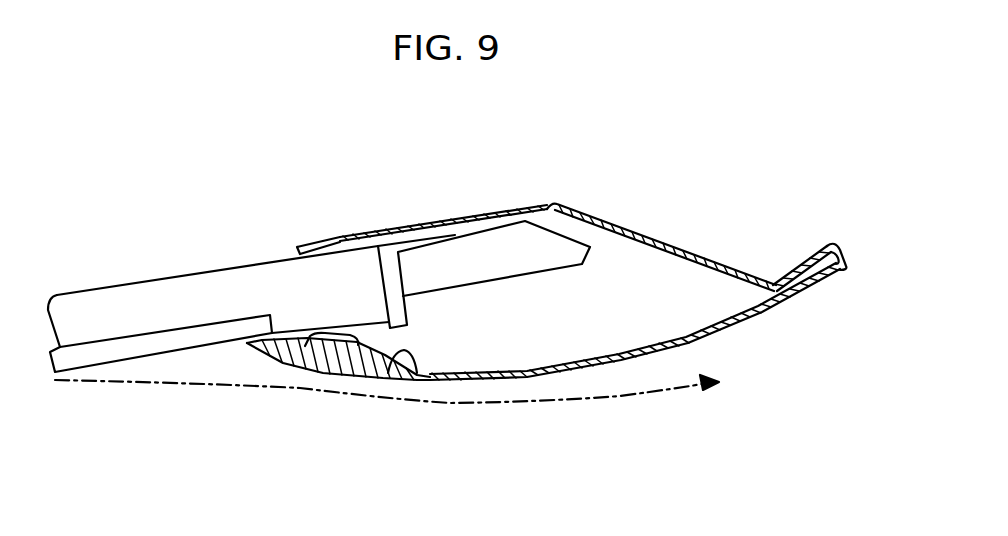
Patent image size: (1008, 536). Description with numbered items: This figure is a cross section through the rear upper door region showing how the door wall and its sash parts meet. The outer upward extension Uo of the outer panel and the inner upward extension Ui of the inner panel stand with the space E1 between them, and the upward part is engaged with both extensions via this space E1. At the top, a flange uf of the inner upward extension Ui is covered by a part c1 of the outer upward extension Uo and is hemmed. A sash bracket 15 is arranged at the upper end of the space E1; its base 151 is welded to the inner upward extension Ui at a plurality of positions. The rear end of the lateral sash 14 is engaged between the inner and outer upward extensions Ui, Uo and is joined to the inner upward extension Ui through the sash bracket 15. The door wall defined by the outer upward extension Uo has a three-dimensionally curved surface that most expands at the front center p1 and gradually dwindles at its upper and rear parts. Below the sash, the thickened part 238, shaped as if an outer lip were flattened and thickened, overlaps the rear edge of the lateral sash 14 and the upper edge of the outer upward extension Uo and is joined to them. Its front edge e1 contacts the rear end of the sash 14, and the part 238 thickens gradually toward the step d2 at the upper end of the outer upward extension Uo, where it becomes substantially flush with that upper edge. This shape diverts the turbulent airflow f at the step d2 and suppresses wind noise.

The lateral sash 14 is at (82, 300).
The base 151 is at (463, 218).
The sash bracket 15 is at (507, 254).
The inner upward extension Ui is at (662, 255).
The space E1 is at (637, 288).
The flange uf is at (782, 273).
The part of the outer upward extension c1 is at (839, 254).
The outer upward extension Uo is at (752, 320).
The thickened part 238 is at (323, 363).
The front edge e1 is at (249, 343).
The step d2 is at (416, 374).
The front center p1 is at (527, 376).
The turbulent airflow f is at (630, 399).